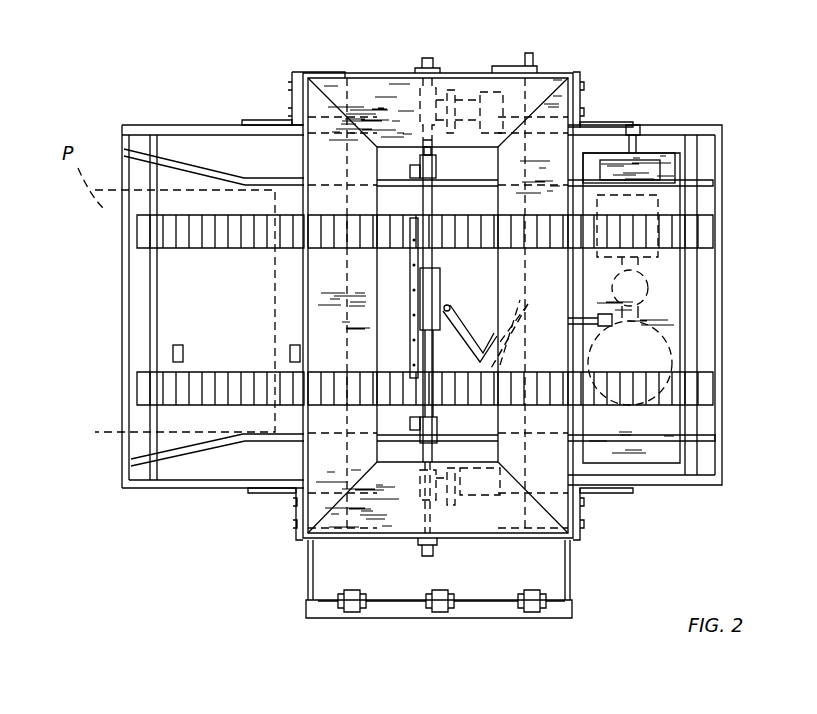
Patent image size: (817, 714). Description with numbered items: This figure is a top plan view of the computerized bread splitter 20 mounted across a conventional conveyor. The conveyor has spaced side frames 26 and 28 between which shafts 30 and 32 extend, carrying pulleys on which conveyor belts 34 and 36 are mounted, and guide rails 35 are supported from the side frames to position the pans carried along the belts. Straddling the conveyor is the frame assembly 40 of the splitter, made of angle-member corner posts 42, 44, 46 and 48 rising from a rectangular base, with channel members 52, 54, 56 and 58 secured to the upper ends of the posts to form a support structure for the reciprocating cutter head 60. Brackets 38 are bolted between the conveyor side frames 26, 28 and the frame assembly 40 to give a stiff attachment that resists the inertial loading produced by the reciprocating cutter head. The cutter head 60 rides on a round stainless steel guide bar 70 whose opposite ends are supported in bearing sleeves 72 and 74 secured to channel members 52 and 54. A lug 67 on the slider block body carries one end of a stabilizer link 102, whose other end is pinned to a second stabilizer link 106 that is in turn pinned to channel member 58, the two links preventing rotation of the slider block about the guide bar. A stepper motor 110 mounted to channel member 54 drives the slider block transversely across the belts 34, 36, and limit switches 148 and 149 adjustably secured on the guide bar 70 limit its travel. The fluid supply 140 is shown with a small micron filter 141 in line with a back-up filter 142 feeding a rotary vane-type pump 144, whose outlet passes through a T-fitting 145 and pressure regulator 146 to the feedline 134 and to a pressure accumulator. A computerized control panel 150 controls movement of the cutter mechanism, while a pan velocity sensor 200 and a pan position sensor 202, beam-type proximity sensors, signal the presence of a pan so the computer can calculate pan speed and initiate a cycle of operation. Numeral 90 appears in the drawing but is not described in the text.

The computerized bread splitter 20 is at (348, 74).
The side frame 26 is at (148, 492).
The side frame 28 is at (166, 126).
The shaft 30 is at (138, 312).
The shaft 32 is at (688, 470).
The conveyor belt 34 is at (265, 400).
The guide rails 35 is at (700, 440).
The conveyor belt 36 is at (244, 243).
The brackets 38 is at (258, 122).
The frame assembly 40 is at (300, 274).
The corner post 42 is at (302, 72).
The corner post 44 is at (540, 70).
The corner post 46 is at (296, 530).
The corner post 48 is at (566, 537).
The channel member 52 is at (470, 520).
The channel member 54 is at (400, 78).
The channel member 56 is at (305, 168).
The channel member 58 is at (558, 466).
The cutter head 60 is at (402, 322).
The lug 67 is at (453, 326).
The guide bar 70 is at (432, 194).
The bearing sleeve 72 is at (422, 545).
The bearing sleeve 74 is at (430, 60).
The lower bracket 90 is at (418, 434).
The stabilizer link 102 is at (490, 302).
The second stabilizer link 106 is at (500, 365).
The stepper motor 110 is at (495, 92).
The feedline 134 is at (526, 329).
The fluid supply 140 is at (675, 172).
The small micron filter 141 is at (628, 152).
The back-up filter 142 is at (655, 216).
The rotary vane-type pump 144 is at (648, 288).
The T-fitting 145 is at (665, 308).
The pressure regulator 146 is at (600, 320).
The limit switch 148 is at (436, 168).
The limit switch 149 is at (438, 424).
The computerized control panel 150 is at (306, 583).
The pan velocity sensor 200 is at (178, 345).
The pan position sensor 202 is at (290, 352).